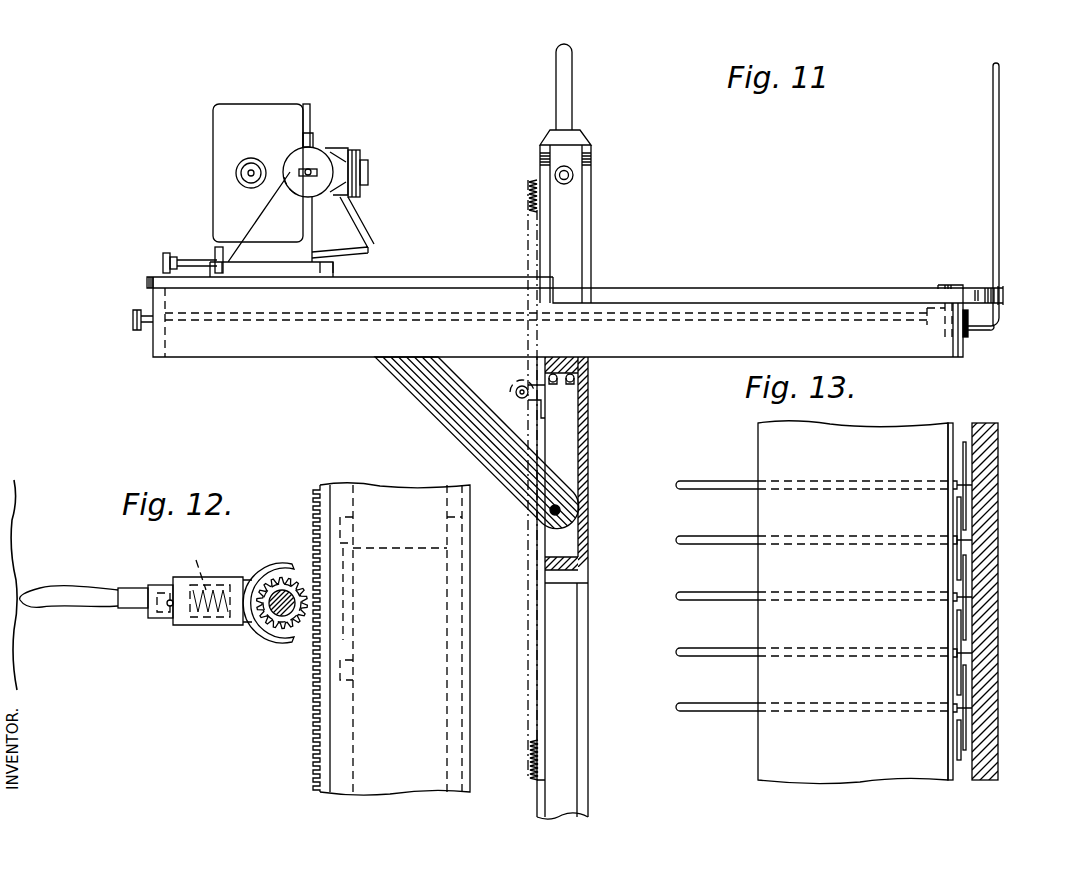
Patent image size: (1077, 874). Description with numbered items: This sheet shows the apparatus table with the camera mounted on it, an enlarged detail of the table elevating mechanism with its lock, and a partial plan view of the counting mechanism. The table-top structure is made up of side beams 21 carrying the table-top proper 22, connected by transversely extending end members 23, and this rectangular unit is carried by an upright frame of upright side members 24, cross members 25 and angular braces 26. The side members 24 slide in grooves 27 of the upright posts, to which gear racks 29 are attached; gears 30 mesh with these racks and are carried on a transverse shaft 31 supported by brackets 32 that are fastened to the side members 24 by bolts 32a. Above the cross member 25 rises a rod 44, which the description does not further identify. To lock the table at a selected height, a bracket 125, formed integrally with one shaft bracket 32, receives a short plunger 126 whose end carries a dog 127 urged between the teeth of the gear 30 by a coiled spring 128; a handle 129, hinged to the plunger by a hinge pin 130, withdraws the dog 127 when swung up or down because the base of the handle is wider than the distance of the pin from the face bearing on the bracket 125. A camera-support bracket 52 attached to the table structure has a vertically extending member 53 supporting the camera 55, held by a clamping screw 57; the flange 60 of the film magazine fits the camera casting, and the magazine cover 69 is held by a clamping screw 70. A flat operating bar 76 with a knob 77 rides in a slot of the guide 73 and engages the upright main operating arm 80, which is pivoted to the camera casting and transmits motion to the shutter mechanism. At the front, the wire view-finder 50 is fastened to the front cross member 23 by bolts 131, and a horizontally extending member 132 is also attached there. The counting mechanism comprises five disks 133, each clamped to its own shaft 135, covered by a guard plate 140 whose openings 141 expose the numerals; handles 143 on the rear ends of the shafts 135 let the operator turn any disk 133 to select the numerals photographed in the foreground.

In FIG. 11, the side beam 21 is at (287, 345).
In FIG. 11, the table-top proper 22 is at (450, 285).
In FIG. 11, the end member 23 is at (160, 337).
In FIG. 13, the end member 23 is at (985, 524).
In FIG. 11, the upright side member 24 is at (560, 585).
In FIG. 11, the cross member 25 is at (590, 360).
In FIG. 11, the angular brace 26 is at (440, 407).
In FIG. 11, the groove 27 is at (560, 716).
In FIG. 11, the gear rack 29 is at (529, 193).
In FIG. 12, the gear rack 29 is at (313, 750).
In FIG. 12, the gear 30 is at (282, 570).
In FIG. 12, the transverse shaft 31 is at (300, 600).
In FIG. 12, the bracket 32 is at (322, 572).
In FIG. 12, the bolt 32a is at (353, 678).
In FIG. 11, the rod 44 is at (573, 85).
In FIG. 11, the wire view-finder 50 is at (1000, 176).
In FIG. 11, the camera-support bracket 52 is at (333, 273).
In FIG. 11, the vertically extending member 53 is at (296, 238).
In FIG. 11, the camera 55 is at (332, 156).
In FIG. 11, the clamping screw 57 is at (303, 182).
In FIG. 11, the flange 60 is at (360, 156).
In FIG. 11, the cover 69 is at (264, 117).
In FIG. 11, the clamping screw 70 is at (237, 173).
In FIG. 11, the guide 73 is at (228, 260).
In FIG. 11, the operating bar 76 is at (187, 258).
In FIG. 11, the handle or knob 77 is at (163, 258).
In FIG. 11, the main operating arm 80 is at (356, 215).
In FIG. 12, the bracket 125 is at (236, 630).
In FIG. 12, the plunger 126 is at (218, 620).
In FIG. 12, the dog 127 is at (250, 588).
In FIG. 12, the coiled spring 128 is at (191, 564).
In FIG. 12, the handle 129 is at (72, 600).
In FIG. 12, the hinge pin 130 is at (163, 618).
In FIG. 11, the bolt 131 is at (968, 330).
In FIG. 11, the horizontally extending member 132 is at (982, 290).
In FIG. 11, the disk 133 is at (948, 335).
In FIG. 13, the disk 133 is at (965, 455).
In FIG. 11, the shaft 135 is at (668, 300).
In FIG. 13, the shaft 135 is at (715, 490).
In FIG. 11, the guard plate 140 is at (940, 285).
In FIG. 13, the guard plate 140 is at (775, 447).
In FIG. 13, the opening 141 is at (950, 485).
In FIG. 11, the handle 143 is at (133, 320).